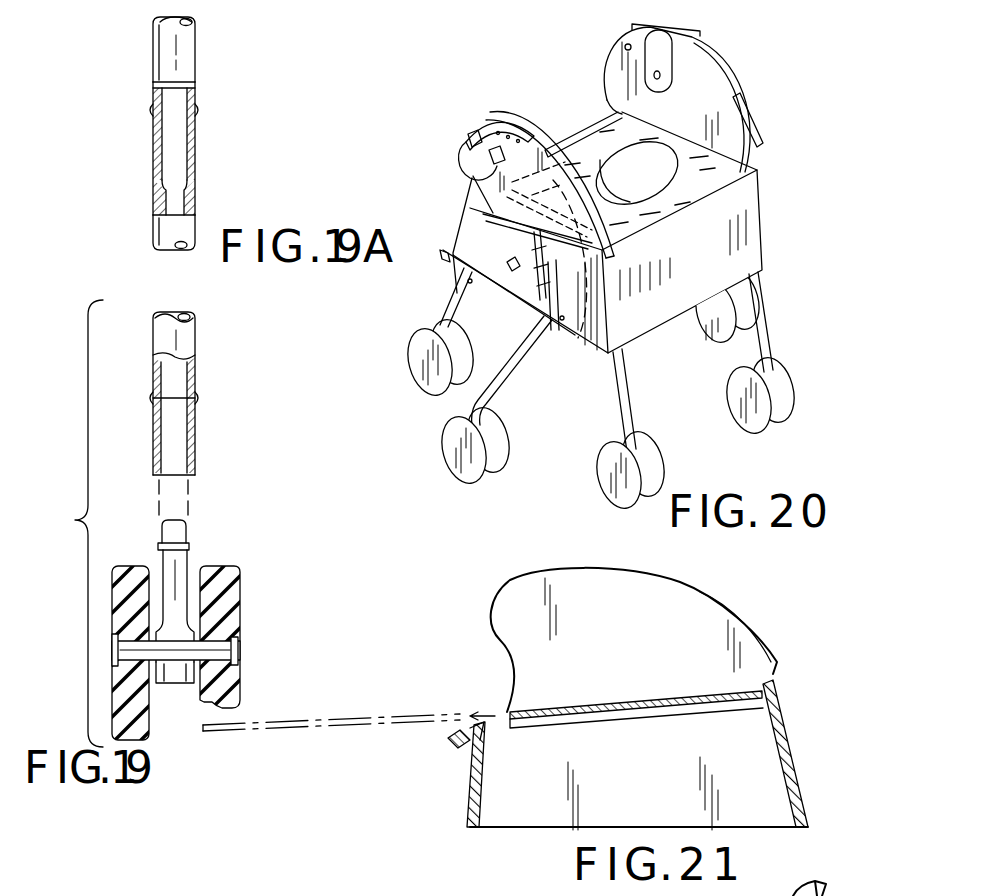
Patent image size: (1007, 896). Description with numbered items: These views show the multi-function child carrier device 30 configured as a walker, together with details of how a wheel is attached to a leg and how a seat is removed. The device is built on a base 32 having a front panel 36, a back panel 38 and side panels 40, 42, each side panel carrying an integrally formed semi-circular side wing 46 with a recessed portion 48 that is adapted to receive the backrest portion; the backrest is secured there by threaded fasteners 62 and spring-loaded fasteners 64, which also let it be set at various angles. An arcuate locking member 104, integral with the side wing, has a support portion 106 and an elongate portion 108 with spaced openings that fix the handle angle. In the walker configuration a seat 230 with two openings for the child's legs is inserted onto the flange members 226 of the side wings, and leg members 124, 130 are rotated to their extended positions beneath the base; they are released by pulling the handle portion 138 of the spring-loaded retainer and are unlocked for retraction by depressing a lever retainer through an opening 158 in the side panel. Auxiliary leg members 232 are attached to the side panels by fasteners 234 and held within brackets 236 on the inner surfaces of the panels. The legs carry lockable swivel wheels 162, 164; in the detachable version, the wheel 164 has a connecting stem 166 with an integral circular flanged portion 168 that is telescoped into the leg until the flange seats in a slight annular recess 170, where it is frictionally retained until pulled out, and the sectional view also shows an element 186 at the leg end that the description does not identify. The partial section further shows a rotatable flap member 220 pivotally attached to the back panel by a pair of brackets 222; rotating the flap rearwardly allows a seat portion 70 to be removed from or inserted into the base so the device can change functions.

In FIG. 20, the multi-function child carrier device 30 is at (467, 85).
In FIG. 20, the base 32 is at (766, 188).
In FIG. 21, the base 32 is at (784, 675).
In FIG. 20, the front panel 36 is at (694, 274).
In FIG. 21, the front panel 36 is at (795, 732).
In FIG. 21, the back panel 38 is at (478, 783).
In FIG. 20, the side panel 40 is at (504, 251).
In FIG. 20, the side panel 42 is at (640, 177).
In FIG. 21, the side panel 42 is at (638, 776).
In FIG. 20, the side wing 46 is at (727, 68).
In FIG. 21, the side wing 46 is at (632, 633).
In FIG. 20, the recessed portion 48 is at (694, 111).
In FIG. 20, the threaded fastener 62 is at (489, 156).
In FIG. 20, the spring-loaded fastener 64 is at (468, 138).
In FIG. 19, the seat portion 70 is at (328, 715).
In FIG. 21, the seat portion 70 is at (636, 700).
In FIG. 20, the arcuate locking member 104 is at (528, 115).
In FIG. 20, the support portion 106 is at (506, 116).
In FIG. 20, the elongate portion 108 is at (490, 172).
In FIG. 20, the leg member 124 is at (628, 400).
In FIG. 19, the leg member 130 is at (190, 333).
In FIG. 20, the leg member 130 is at (452, 302).
In FIG. 20, the handle portion 138 is at (482, 283).
In FIG. 20, the opening 158 is at (486, 266).
In FIG. 20, the wheel 162 is at (612, 488).
In FIG. 19, the wheel 164 is at (250, 570).
In FIG. 20, the wheel 164 is at (412, 357).
In FIG. 19A, the connecting stem 166 is at (178, 166).
In FIG. 19, the connecting stem 166 is at (183, 555).
In FIG. 19A, the flanged portion 168 is at (194, 112).
In FIG. 19, the flanged portion 168 is at (198, 520).
In FIG. 19, the annular recess 170 is at (190, 395).
In FIG. 19A, the tube end 186 is at (182, 47).
In FIG. 21, the rotatable flap member 220 is at (455, 737).
In FIG. 21, the brackets 222 is at (474, 756).
In FIG. 21, the flange members 226 is at (660, 712).
In FIG. 20, the seat 230 is at (592, 138).
In FIG. 20, the auxiliary leg members 232 is at (445, 465).
In FIG. 20, the fasteners 234 is at (480, 215).
In FIG. 20, the brackets 236 is at (567, 320).